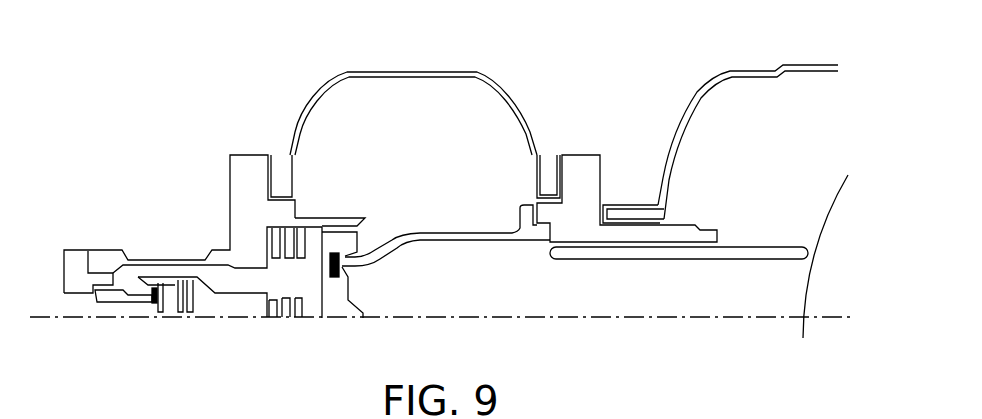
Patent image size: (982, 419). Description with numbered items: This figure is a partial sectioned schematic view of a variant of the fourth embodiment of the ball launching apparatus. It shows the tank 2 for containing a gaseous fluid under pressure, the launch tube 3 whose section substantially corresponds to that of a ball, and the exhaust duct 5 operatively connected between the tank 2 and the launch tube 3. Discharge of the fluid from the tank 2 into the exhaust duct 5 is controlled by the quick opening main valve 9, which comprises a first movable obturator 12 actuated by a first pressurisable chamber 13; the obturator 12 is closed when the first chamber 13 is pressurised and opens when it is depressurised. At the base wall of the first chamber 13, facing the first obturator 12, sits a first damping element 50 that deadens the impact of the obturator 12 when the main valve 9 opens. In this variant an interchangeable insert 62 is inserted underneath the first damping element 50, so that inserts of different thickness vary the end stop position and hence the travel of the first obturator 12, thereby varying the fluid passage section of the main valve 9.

The tank 2 is at (463, 103).
The launch tube 3 is at (742, 112).
The exhaust duct 5 is at (588, 283).
The quick opening main valve 9 is at (327, 208).
The first movable obturator 12 is at (337, 300).
The first pressurisable chamber 13 is at (294, 277).
The first damping element 50 is at (302, 303).
The interchangeable insert 62 is at (290, 245).